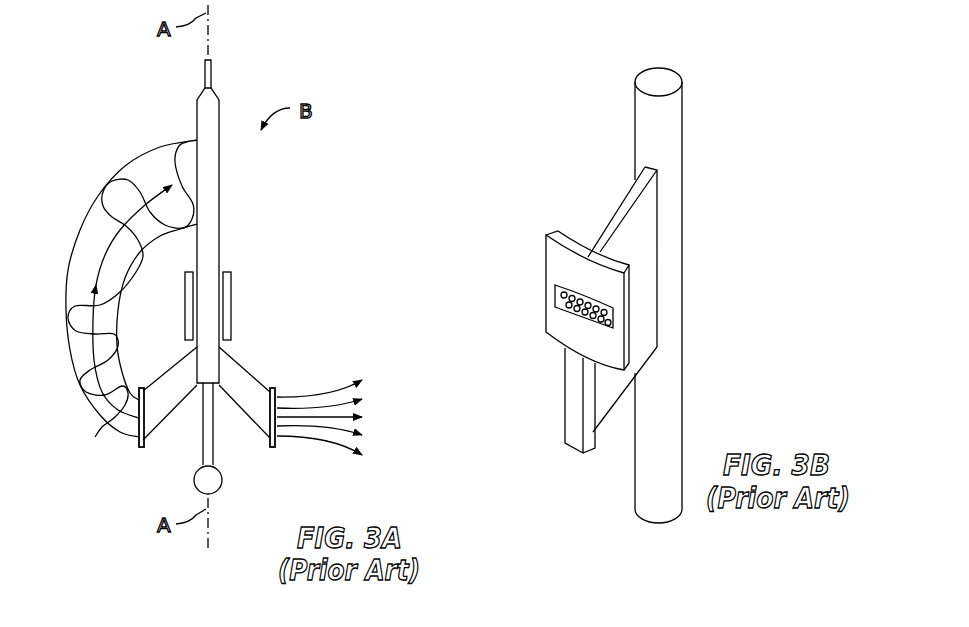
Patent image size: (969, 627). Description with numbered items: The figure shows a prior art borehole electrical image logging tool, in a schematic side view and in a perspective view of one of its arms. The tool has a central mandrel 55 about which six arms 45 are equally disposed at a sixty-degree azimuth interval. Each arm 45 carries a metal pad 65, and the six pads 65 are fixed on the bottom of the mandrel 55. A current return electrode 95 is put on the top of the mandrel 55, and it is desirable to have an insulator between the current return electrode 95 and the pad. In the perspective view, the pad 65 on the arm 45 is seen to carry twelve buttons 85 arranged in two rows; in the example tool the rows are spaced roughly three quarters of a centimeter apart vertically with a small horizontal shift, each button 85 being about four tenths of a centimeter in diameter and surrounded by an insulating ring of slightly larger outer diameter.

In FIG. 3A, the mandrel 55 is at (219, 197).
In FIG. 3B, the mandrel 55 is at (635, 127).
In FIG. 3A, the current return electrode 95 is at (211, 77).
In FIG. 3A, the arm 45 is at (246, 371).
In FIG. 3B, the arm 45 is at (615, 212).
In FIG. 3A, the metal pad 65 is at (275, 388).
In FIG. 3B, the metal pad 65 is at (556, 299).
In FIG. 3B, the button 85 is at (558, 294).